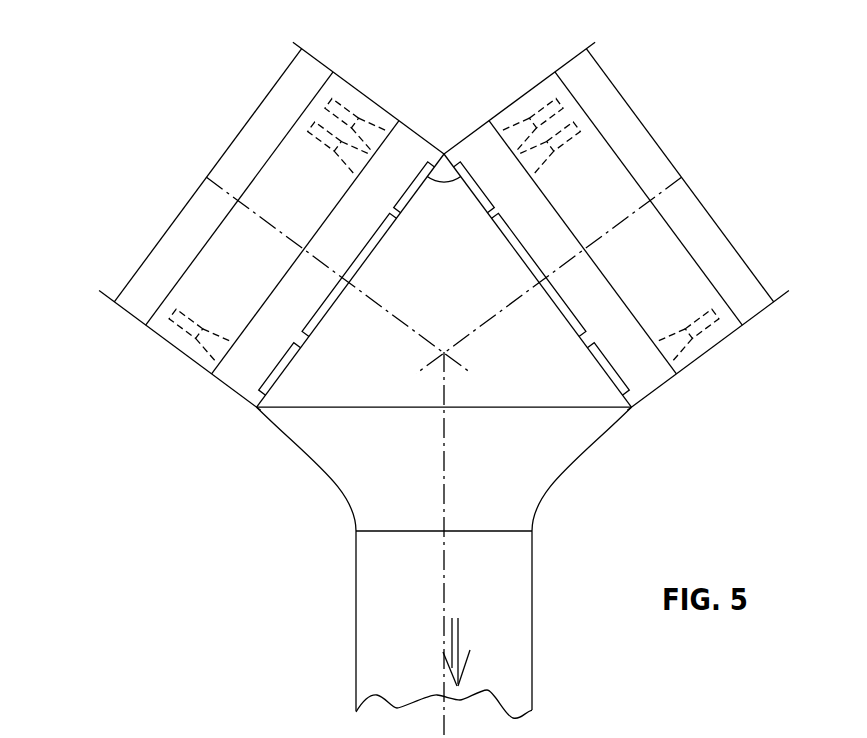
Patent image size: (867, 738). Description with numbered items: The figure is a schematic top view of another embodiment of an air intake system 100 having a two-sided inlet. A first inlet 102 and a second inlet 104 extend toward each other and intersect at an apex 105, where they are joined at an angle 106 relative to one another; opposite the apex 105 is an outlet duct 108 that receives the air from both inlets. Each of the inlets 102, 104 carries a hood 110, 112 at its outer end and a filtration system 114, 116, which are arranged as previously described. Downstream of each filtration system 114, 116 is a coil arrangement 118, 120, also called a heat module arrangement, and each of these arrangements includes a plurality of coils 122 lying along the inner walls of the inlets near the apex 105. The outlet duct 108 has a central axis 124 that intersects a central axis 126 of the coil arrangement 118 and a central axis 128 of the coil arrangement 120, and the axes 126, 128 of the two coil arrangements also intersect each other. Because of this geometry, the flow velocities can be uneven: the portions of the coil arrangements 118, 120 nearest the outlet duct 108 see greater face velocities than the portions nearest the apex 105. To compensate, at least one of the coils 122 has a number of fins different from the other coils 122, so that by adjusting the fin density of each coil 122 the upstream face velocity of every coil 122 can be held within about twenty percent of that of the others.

The air intake system 100 is at (103, 198).
The first inlet 102 is at (158, 337).
The second inlet 104 is at (708, 353).
The apex 105 is at (445, 153).
The angle 106 is at (440, 185).
The outlet duct 108 is at (532, 627).
The hood 110 is at (122, 313).
The hood 112 is at (748, 263).
The filtration system 114 is at (357, 115).
The filtration system 116 is at (525, 123).
The coil arrangement 118 is at (375, 253).
The coil arrangement 120 is at (515, 253).
The coil 122 is at (473, 198).
The central axis 124 is at (443, 523).
The central axis 126 is at (370, 302).
The central axis 128 is at (510, 303).